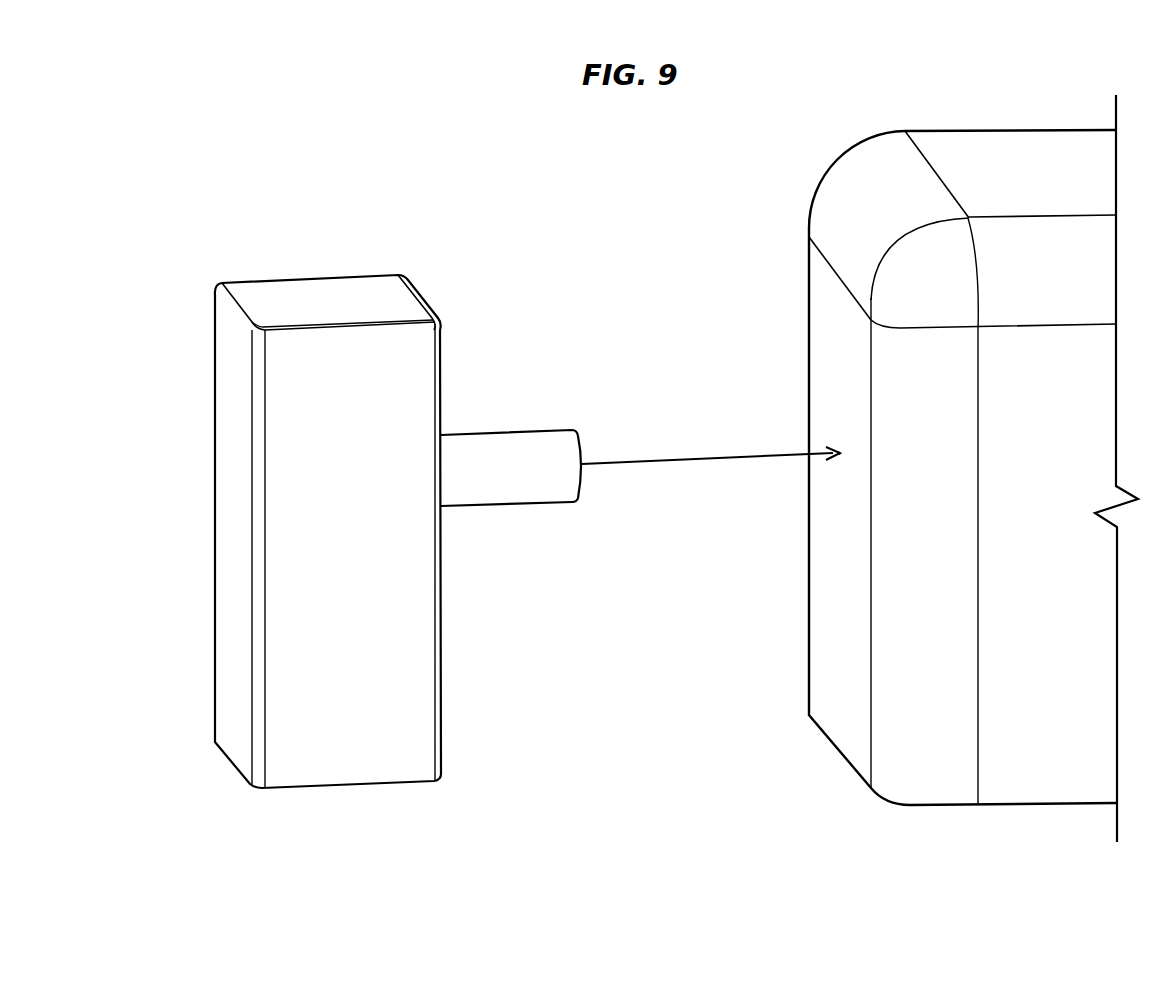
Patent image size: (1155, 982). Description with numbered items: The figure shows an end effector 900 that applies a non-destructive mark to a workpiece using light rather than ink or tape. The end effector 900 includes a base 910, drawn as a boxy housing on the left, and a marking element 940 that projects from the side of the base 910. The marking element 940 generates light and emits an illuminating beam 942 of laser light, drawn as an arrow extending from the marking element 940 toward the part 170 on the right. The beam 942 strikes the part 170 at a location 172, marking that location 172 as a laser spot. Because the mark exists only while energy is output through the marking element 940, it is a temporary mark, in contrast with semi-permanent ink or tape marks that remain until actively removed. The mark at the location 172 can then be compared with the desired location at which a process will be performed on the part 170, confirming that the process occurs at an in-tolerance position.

The end effector 900 is at (275, 192).
The base 910 is at (350, 276).
The marking element 940 is at (512, 431).
The beam 942 is at (692, 459).
The part 170 is at (812, 207).
The location 172 is at (840, 457).